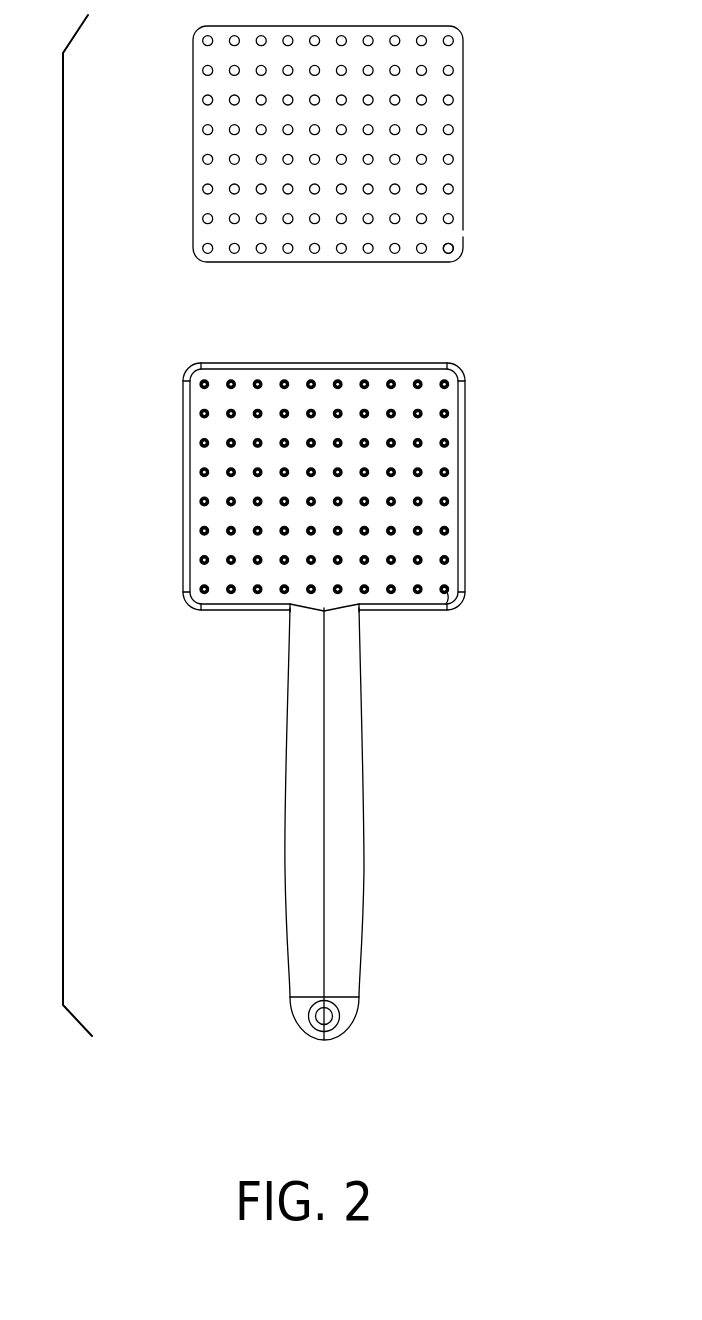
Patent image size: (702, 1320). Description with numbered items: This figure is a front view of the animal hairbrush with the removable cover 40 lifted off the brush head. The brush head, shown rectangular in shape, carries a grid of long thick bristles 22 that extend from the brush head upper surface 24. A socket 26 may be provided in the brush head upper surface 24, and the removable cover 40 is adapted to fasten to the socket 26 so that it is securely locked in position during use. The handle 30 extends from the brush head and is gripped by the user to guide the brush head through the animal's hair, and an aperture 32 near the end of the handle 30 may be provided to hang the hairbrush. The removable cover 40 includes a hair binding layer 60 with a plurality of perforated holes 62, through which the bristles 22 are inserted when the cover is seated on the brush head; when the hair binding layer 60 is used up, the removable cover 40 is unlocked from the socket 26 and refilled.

The bristles 22 is at (452, 370).
The brush head upper surface 24 is at (448, 593).
The socket 26 is at (405, 603).
The handle 30 is at (353, 865).
The aperture 32 is at (325, 1018).
The removable cover 40 is at (208, 205).
The hair binding layer 60 is at (453, 145).
The perforated holes 62 is at (450, 249).